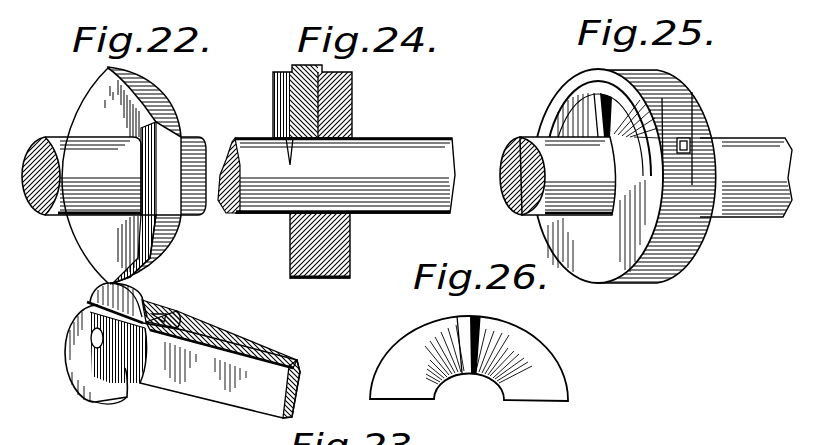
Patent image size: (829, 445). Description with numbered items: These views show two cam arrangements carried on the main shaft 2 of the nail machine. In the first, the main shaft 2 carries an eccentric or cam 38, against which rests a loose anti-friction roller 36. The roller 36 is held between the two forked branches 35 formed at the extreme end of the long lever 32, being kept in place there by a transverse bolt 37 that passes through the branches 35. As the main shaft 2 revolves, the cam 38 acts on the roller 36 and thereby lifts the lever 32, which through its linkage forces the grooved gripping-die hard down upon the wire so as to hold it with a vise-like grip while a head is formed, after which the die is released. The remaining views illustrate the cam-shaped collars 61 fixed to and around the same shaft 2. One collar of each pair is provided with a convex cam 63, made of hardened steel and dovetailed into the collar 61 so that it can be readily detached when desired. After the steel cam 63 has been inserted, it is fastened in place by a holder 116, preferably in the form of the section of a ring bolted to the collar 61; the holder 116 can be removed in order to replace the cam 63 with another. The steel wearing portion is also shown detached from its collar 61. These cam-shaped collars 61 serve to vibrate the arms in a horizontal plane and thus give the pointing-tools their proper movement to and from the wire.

In FIG. 22, the main shaft 2 is at (114, 176).
In FIG. 24, the main shaft 2 is at (336, 175).
In FIG. 25, the main shaft 2 is at (646, 177).
In FIG. 22, the lever 32 is at (193, 360).
In FIG. 22, the branches 35 is at (85, 302).
In FIG. 22, the anti-friction roller 36 is at (97, 391).
In FIG. 22, the transverse bolt 37 is at (93, 341).
In FIG. 22, the cam 38 is at (153, 245).
In FIG. 24, the cam-shaped collar 61 is at (342, 110).
In FIG. 25, the cam-shaped collar 61 is at (624, 176).
In FIG. 24, the convex cam 63 is at (275, 113).
In FIG. 25, the convex cam 63 is at (609, 137).
In FIG. 26, the convex cam 63 is at (469, 361).
In FIG. 25, the holder 116 is at (672, 107).